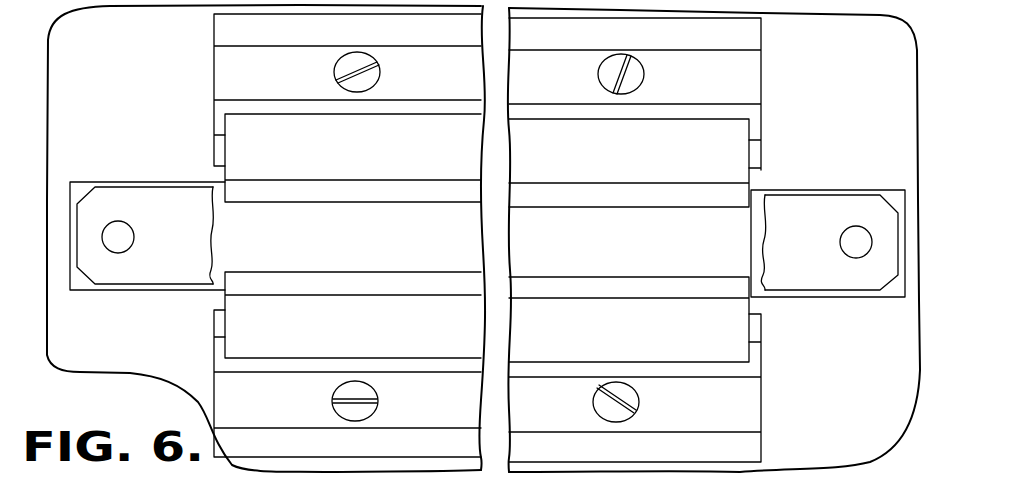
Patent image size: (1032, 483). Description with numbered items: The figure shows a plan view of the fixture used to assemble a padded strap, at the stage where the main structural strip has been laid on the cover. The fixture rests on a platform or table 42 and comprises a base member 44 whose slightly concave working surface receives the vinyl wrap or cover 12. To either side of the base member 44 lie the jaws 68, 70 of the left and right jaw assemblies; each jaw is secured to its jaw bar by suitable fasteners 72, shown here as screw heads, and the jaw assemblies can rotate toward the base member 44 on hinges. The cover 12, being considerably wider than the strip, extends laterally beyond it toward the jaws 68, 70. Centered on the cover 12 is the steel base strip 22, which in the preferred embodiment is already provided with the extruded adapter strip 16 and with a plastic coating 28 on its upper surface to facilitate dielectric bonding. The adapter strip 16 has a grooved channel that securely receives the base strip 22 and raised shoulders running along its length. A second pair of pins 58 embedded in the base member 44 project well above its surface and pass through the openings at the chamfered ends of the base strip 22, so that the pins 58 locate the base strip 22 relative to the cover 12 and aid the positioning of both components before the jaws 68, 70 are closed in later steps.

The cover 12 is at (632, 164).
The adapter strip 16 is at (325, 199).
The base strip 22 is at (795, 192).
The plastic coating 28 is at (212, 240).
The table 42 is at (862, 399).
The base member 44 is at (840, 192).
The pins 58 is at (116, 223).
The jaw 68 is at (212, 68).
The jaw 70 is at (212, 357).
The fasteners 72 is at (379, 400).